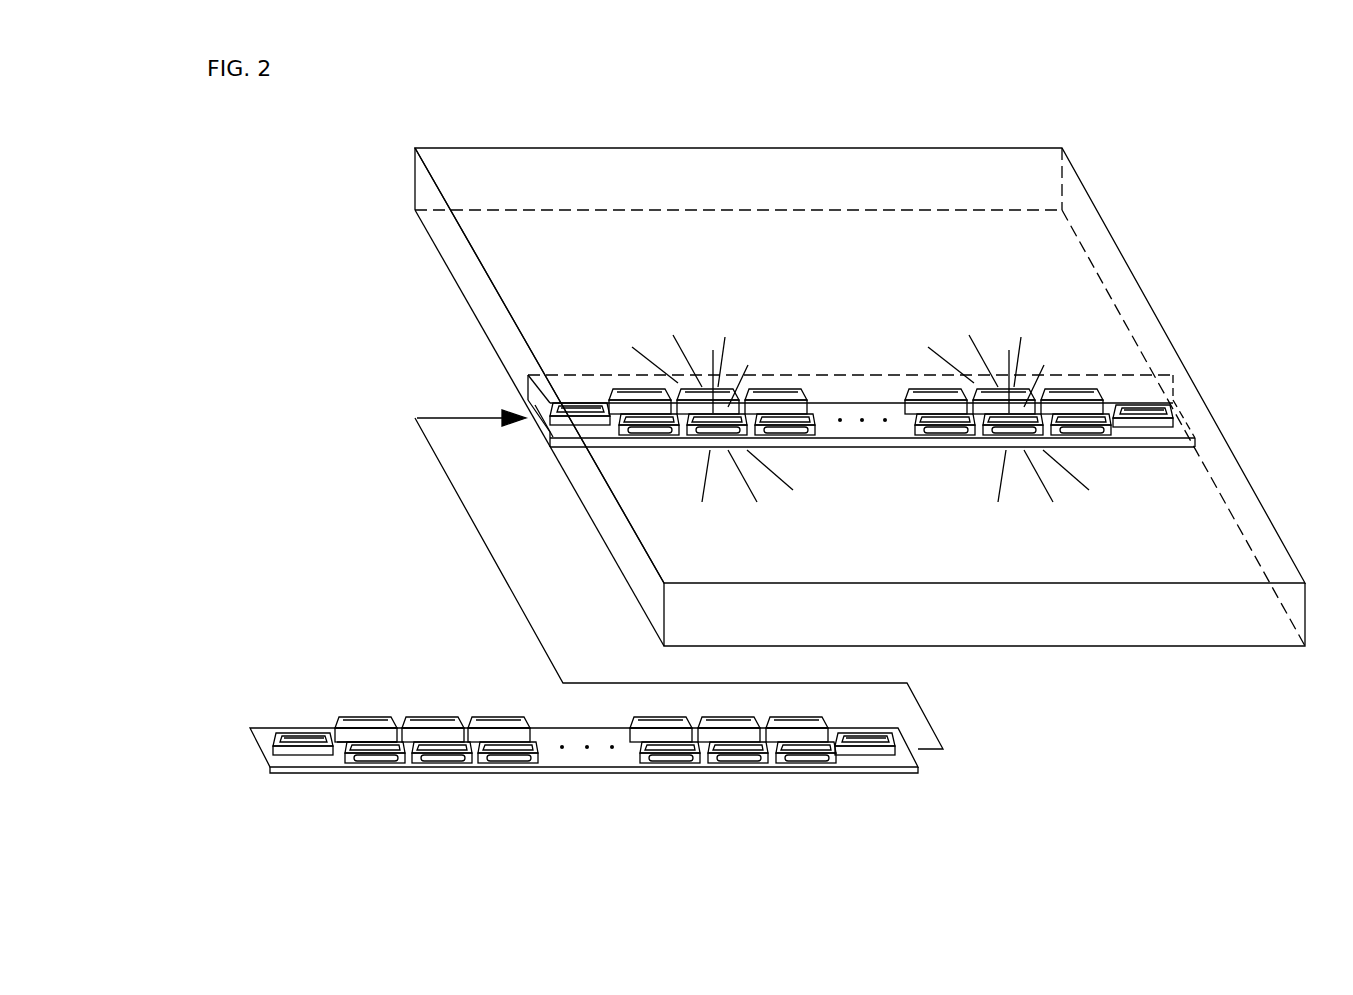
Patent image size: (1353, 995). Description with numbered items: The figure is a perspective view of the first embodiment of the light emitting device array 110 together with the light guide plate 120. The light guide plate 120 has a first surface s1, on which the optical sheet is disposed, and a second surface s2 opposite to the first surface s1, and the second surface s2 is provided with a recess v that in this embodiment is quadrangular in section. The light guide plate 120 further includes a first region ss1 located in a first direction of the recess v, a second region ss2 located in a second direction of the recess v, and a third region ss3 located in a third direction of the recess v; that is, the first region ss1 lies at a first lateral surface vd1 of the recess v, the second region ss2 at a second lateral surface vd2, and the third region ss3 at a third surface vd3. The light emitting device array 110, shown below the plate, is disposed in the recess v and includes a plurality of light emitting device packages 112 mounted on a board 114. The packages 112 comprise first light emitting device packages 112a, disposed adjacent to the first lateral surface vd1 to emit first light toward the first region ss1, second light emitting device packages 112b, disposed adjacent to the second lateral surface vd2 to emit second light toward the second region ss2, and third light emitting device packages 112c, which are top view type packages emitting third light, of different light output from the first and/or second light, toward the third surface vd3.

The light guide plate 120 is at (806, 397).
The first surface s1 is at (1087, 212).
The second surface s2 is at (308, 327).
The first region ss1 is at (512, 342).
The second region ss2 is at (597, 500).
The third region ss3 is at (544, 387).
The recess v is at (805, 385).
The first lateral surface vd1 is at (532, 390).
The second lateral surface vd2 is at (550, 447).
The third surface vd3 is at (568, 425).
The light emitting device array 110 is at (572, 729).
The light emitting device packages 112 is at (384, 684).
The first light emitting device package 112a is at (362, 723).
The second light emitting device package 112b is at (385, 743).
The third light emitting device package 112c is at (352, 688).
The board 114 is at (252, 730).